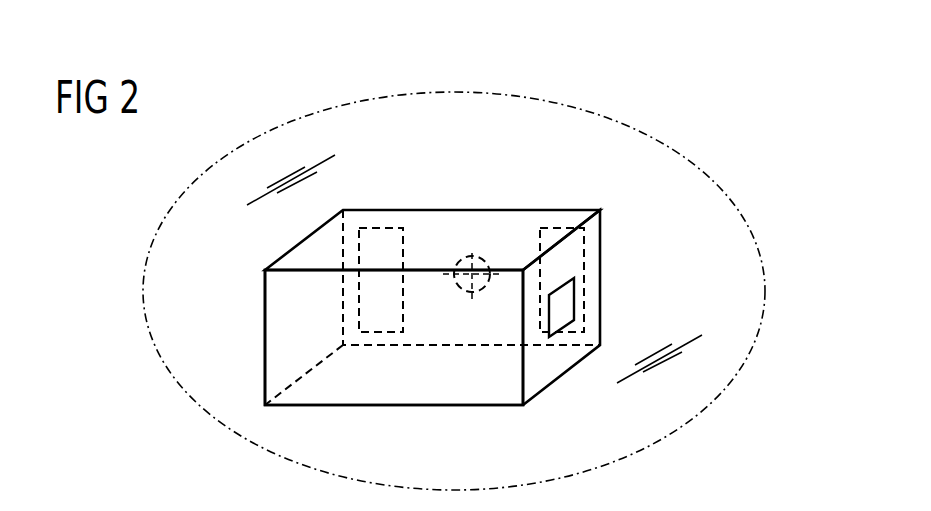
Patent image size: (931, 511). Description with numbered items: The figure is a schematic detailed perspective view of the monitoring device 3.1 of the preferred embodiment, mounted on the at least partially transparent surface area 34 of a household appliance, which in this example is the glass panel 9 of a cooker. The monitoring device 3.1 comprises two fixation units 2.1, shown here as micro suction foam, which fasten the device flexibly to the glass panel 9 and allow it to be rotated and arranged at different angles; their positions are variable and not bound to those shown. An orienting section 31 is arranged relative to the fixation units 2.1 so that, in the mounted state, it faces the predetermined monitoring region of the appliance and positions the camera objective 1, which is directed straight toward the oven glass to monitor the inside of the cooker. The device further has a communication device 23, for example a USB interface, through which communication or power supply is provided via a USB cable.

The camera objective 1 is at (480, 258).
The fixation unit 2.1 is at (383, 233).
The monitoring device 3.1 is at (287, 342).
The glass panel 9 is at (740, 292).
The communication device 23 is at (574, 306).
The orienting section 31 is at (431, 228).
The surface area 34 is at (658, 180).